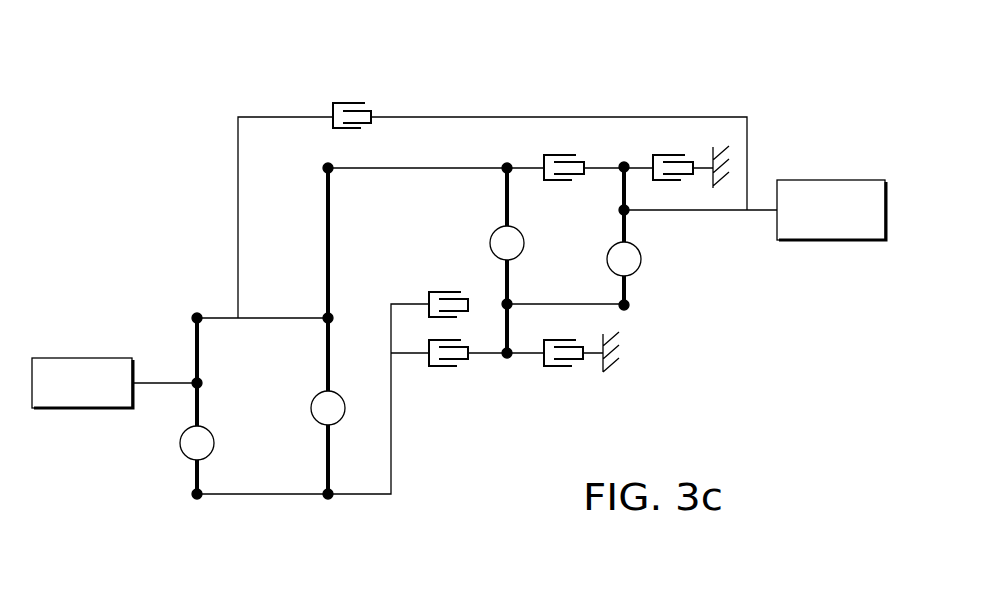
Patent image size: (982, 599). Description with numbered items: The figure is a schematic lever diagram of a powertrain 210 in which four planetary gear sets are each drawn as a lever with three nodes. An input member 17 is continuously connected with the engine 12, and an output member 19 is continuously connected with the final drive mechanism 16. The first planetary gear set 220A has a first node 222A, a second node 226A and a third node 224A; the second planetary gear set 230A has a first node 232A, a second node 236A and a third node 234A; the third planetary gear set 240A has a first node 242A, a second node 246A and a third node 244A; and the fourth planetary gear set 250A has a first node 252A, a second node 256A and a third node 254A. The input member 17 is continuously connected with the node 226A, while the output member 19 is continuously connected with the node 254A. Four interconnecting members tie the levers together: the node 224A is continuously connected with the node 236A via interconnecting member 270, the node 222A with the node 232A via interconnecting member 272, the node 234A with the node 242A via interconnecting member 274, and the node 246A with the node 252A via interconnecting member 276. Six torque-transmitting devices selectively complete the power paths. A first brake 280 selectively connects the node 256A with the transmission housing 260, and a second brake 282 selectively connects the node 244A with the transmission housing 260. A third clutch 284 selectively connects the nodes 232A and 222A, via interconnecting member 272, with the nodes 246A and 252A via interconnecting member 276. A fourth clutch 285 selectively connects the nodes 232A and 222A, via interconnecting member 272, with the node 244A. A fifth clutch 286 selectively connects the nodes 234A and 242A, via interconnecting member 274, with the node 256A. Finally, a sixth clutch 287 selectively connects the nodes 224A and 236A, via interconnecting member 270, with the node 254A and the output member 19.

The powertrain 210 is at (530, 50).
The engine 12 is at (57, 345).
The final drive mechanism 16 is at (826, 248).
The input member 17 is at (150, 386).
The output member 19 is at (763, 213).
The first planetary gear set 220A is at (198, 506).
The first node of first planetary gear set 222A is at (193, 500).
The third node of first planetary gear set 224A is at (193, 314).
The second node of first planetary gear set 226A is at (200, 381).
The second planetary gear set 230A is at (329, 506).
The first node of second planetary gear set 232A is at (324, 500).
The third node of second planetary gear set 234A is at (332, 172).
The second node of second planetary gear set 236A is at (332, 318).
The third planetary gear set 240A is at (507, 362).
The first node of third planetary gear set 242A is at (503, 172).
The third node of third planetary gear set 244A is at (511, 356).
The second node of third planetary gear set 246A is at (510, 302).
The fourth planetary gear set 250A is at (624, 156).
The first node of fourth planetary gear set 252A is at (629, 304).
The third node of fourth planetary gear set 254A is at (628, 213).
The second node of fourth planetary gear set 256A is at (621, 172).
The transmission housing 260 is at (735, 160).
The interconnecting member 270 is at (267, 318).
The interconnecting member 272 is at (242, 493).
The interconnecting member 274 is at (417, 168).
The interconnecting member 276 is at (530, 306).
The brake 280 is at (692, 152).
The brake 282 is at (585, 372).
The clutch 284 is at (468, 290).
The clutch 285 is at (468, 372).
The clutch 286 is at (580, 153).
The clutch 287 is at (366, 100).